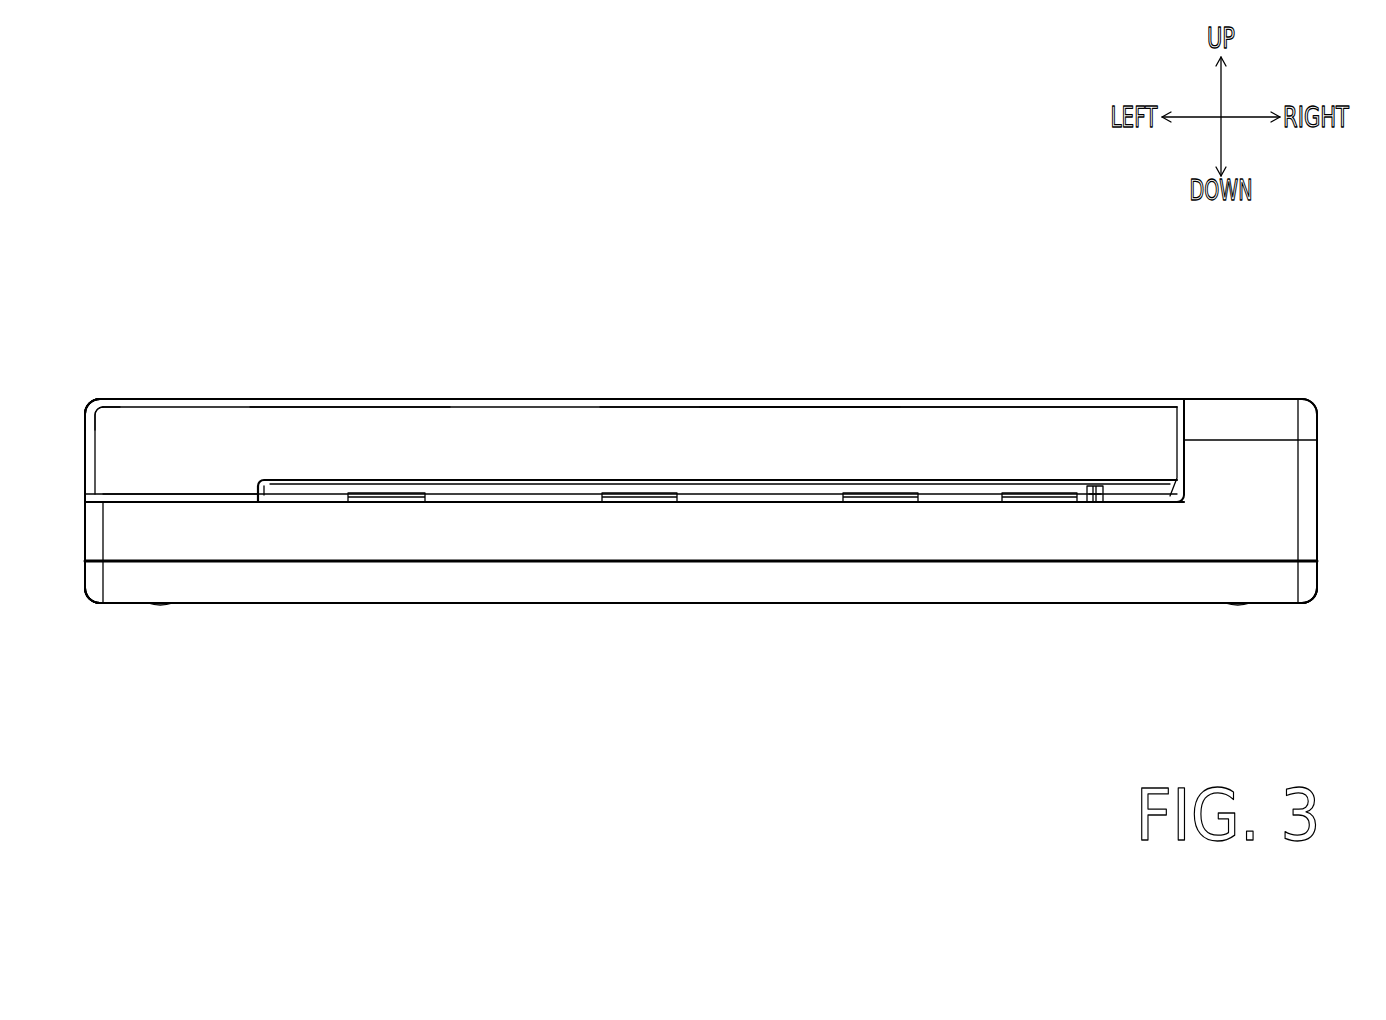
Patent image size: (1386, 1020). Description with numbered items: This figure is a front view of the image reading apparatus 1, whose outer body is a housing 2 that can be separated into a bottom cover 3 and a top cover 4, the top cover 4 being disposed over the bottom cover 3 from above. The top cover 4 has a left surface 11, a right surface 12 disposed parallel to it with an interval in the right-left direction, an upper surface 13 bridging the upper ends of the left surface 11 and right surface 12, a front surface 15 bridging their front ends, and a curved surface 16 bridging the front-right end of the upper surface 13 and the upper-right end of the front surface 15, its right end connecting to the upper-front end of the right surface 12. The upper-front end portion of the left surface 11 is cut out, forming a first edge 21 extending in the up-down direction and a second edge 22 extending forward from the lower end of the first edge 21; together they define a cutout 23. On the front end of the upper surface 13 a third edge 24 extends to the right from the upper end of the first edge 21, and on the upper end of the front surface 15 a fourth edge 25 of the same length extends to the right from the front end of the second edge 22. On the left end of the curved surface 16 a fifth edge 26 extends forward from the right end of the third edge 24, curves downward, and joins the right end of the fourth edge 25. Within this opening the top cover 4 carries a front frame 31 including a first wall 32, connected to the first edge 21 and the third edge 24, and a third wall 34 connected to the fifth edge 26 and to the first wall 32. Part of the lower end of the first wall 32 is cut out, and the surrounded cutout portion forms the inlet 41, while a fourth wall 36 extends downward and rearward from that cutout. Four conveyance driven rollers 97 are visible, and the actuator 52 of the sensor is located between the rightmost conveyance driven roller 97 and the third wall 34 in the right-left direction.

The image reading apparatus 1 is at (660, 741).
The housing 2 is at (1309, 396).
The bottom cover 3 is at (1317, 598).
The top cover 4 is at (1318, 458).
The left surface 11 is at (84, 467).
The right surface 12 is at (1319, 498).
The upper surface 13 is at (605, 396).
The front surface 15 is at (578, 548).
The curved surface 16 is at (1245, 410).
The first edge 21 is at (94, 418).
The second edge 22 is at (114, 502).
The cutout 23 is at (104, 474).
The third edge 24 is at (323, 418).
The fourth edge 25 is at (207, 494).
The fifth edge 26 is at (1172, 504).
The front frame 31 is at (919, 426).
The first wall 32 is at (752, 432).
The third wall 34 is at (1176, 432).
The fourth wall 36 is at (748, 484).
The inlet 41 is at (439, 490).
The actuator 52 is at (1100, 503).
The conveyance driven rollers 97 is at (390, 497).